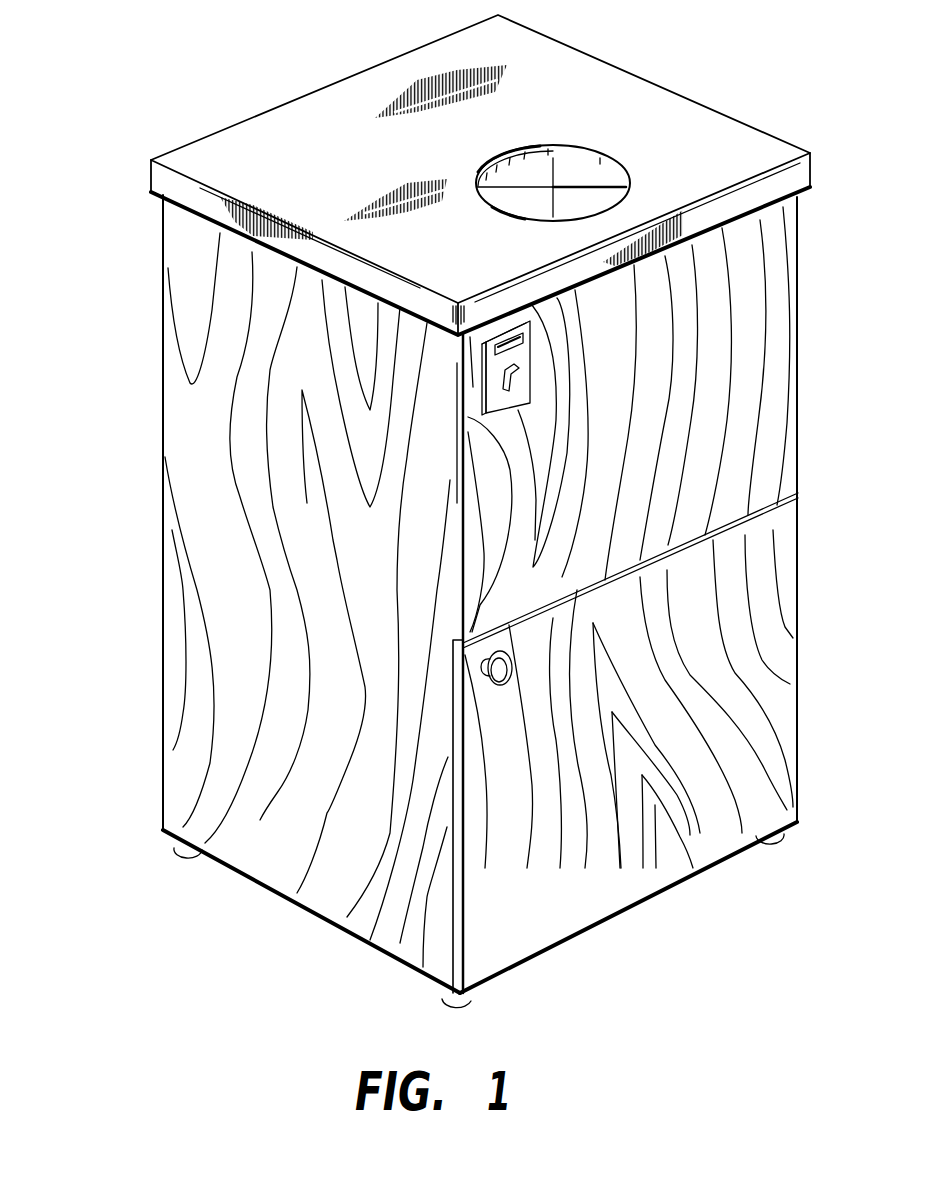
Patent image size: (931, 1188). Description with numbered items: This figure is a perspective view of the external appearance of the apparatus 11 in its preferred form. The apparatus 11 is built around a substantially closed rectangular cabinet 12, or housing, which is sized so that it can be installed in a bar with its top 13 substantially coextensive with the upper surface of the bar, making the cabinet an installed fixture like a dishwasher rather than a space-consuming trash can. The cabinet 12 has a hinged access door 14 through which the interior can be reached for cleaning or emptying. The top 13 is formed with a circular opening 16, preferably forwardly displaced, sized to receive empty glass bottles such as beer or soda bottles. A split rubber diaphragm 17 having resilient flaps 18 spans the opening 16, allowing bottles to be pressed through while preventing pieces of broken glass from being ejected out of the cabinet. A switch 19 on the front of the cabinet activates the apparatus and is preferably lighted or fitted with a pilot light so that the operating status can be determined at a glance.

The apparatus 11 is at (82, 206).
The cabinet 12 is at (168, 630).
The top 13 is at (267, 119).
The hinged access door 14 is at (792, 650).
The circular opening 16 is at (528, 143).
The split rubber diaphragm 17 is at (603, 153).
The resilient flaps 18 is at (510, 176).
The switch 19 is at (532, 372).